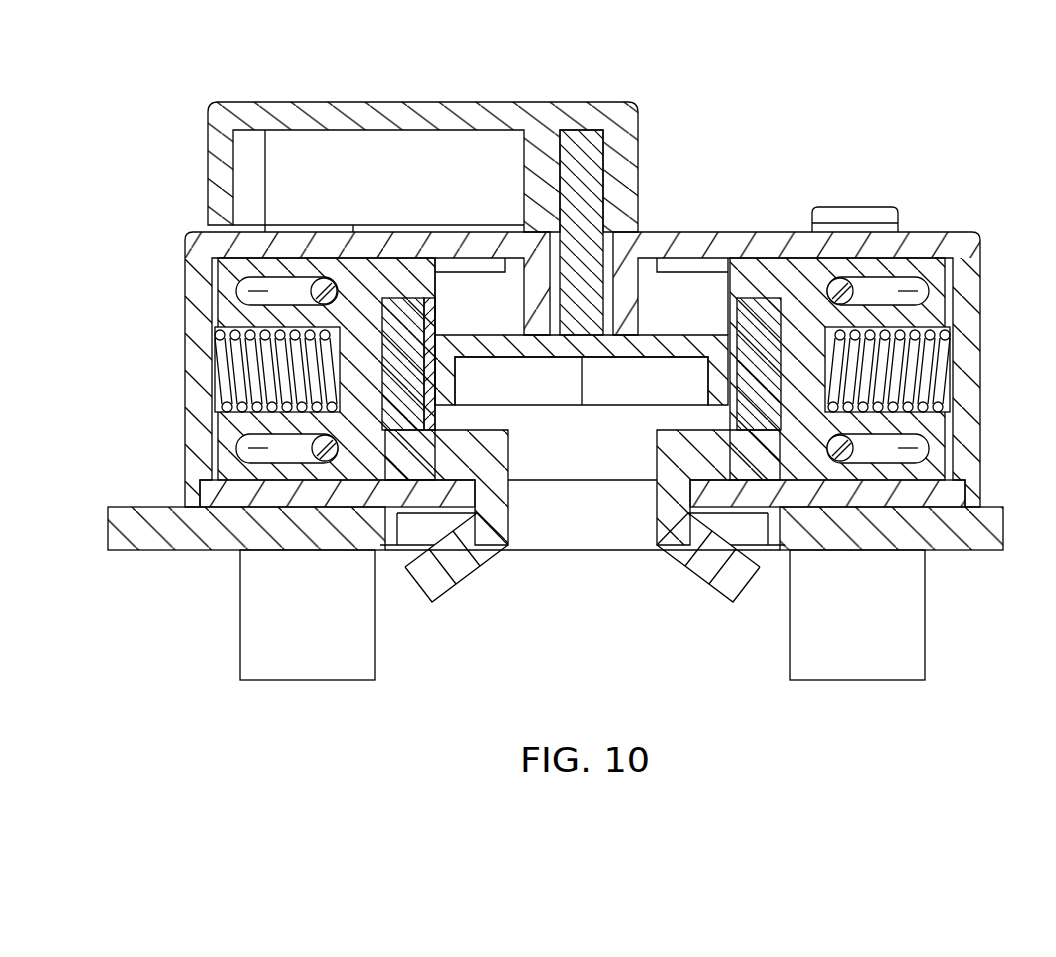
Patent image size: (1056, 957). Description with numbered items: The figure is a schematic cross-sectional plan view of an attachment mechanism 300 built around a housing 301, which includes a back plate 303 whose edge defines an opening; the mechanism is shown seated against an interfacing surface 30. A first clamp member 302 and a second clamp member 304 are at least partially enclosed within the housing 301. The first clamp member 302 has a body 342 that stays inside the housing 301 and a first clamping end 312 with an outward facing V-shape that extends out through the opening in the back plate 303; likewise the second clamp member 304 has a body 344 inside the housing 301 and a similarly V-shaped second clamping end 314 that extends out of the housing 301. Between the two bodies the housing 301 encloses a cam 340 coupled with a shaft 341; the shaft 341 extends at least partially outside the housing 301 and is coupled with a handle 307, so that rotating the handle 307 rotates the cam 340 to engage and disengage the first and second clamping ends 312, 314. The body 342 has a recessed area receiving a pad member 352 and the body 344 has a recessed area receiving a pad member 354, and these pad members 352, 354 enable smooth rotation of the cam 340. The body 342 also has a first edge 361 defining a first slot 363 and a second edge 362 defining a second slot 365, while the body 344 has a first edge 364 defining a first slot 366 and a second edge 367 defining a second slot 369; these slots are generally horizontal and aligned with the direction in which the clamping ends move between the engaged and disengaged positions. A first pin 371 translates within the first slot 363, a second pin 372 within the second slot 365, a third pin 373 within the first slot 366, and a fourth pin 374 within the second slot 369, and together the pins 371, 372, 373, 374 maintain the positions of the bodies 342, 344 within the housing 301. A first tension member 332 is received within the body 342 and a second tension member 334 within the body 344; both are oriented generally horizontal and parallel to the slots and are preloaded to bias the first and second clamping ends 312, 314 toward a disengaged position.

The attachment mechanism 300 is at (886, 137).
The housing 301 is at (955, 238).
The first clamp member 302 is at (378, 259).
The back plate 303 is at (845, 497).
The second clamp member 304 is at (748, 285).
The handle 307 is at (612, 118).
The base plate 30 is at (135, 528).
The first clamping end 312 is at (462, 568).
The second clamping end 314 is at (706, 565).
The first tension member 332 is at (225, 374).
The second tension member 334 is at (932, 384).
The cam 340 is at (530, 395).
The shaft 341 is at (588, 190).
The body 342 is at (313, 272).
The body 344 is at (797, 272).
The pad member 352 is at (390, 412).
The pad member 354 is at (773, 420).
The first edge 361 is at (272, 276).
The second edge 362 is at (290, 464).
The first slot 363 is at (258, 291).
The first edge 364 is at (885, 263).
The second slot 365 is at (238, 448).
The first slot 366 is at (905, 291).
The second edge 367 is at (930, 505).
The second slot 369 is at (900, 448).
The first pin 371 is at (328, 291).
The second pin 372 is at (322, 460).
The third pin 373 is at (840, 292).
The fourth pin 374 is at (900, 456).